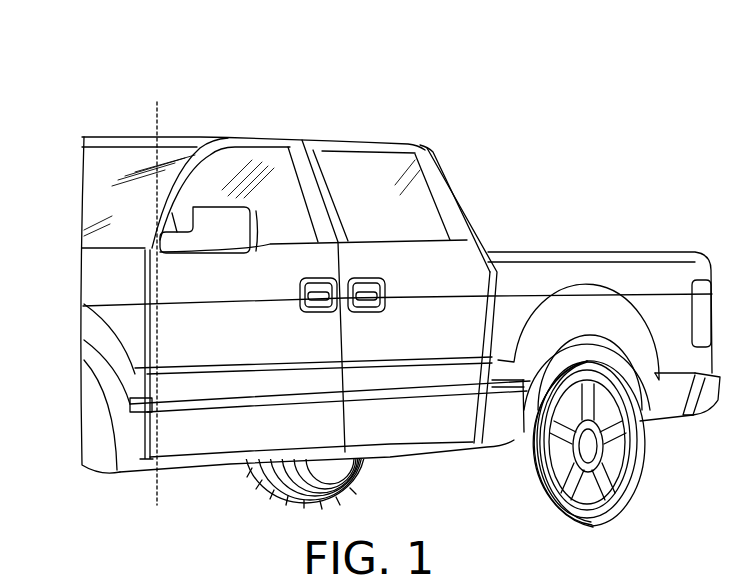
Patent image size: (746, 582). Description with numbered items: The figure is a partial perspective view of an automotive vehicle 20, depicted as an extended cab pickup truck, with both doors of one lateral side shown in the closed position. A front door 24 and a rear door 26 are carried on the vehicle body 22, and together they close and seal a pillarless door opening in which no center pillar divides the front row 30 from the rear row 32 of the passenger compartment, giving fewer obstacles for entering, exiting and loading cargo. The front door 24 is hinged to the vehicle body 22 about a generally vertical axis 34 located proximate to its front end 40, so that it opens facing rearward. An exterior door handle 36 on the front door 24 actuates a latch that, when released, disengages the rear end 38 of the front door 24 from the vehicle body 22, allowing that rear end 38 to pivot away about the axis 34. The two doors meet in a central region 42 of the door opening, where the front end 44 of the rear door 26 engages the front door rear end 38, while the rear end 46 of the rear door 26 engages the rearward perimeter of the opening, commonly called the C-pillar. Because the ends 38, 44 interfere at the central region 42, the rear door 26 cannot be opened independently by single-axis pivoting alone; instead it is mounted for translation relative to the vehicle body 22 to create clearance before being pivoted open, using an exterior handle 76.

The automotive vehicle 20 is at (513, 63).
The vehicle body 22 is at (458, 197).
The front door 24 is at (257, 141).
The rear door 26 is at (380, 143).
The front row 30 is at (217, 52).
The rear row 32 is at (435, 78).
The generally vertical axis 34 is at (157, 112).
The exterior door handle 36 is at (300, 296).
The rear end of the front door 38 is at (322, 180).
The front end of the front door 40 is at (148, 283).
The central region 42 is at (298, 140).
The front end of the rear door 44 is at (322, 178).
The rear end of the rear door 46 is at (437, 175).
The exterior handle 76 is at (385, 297).